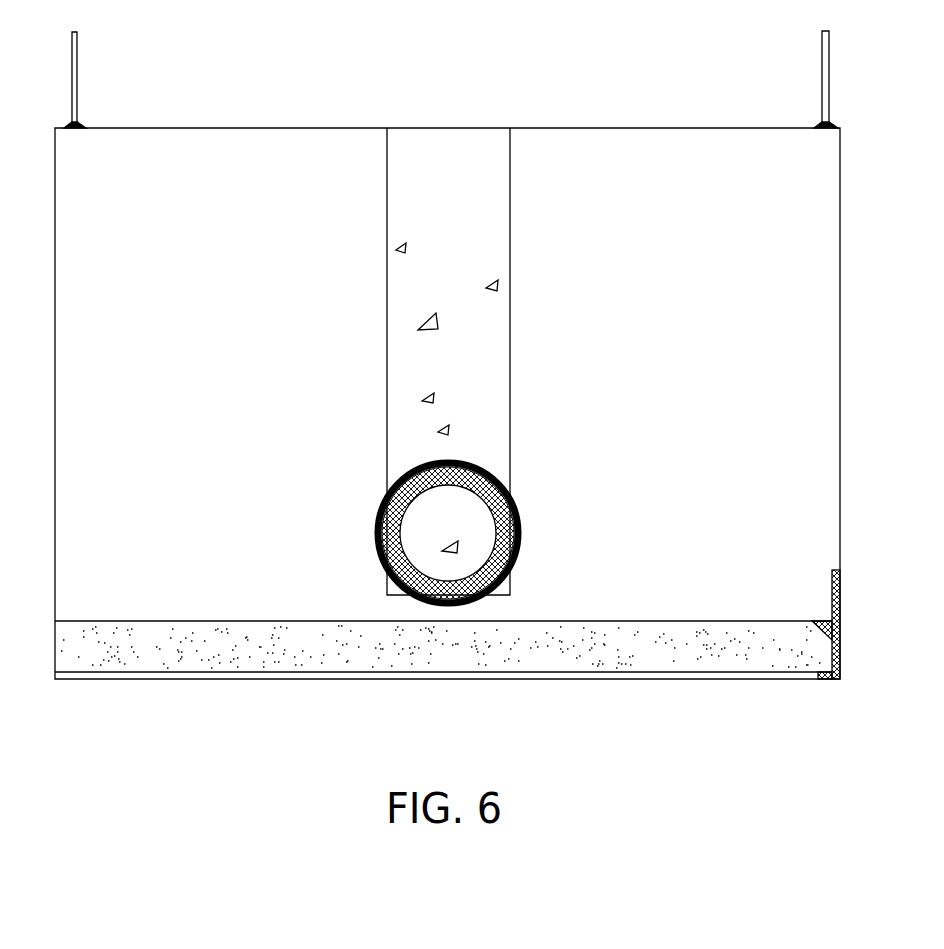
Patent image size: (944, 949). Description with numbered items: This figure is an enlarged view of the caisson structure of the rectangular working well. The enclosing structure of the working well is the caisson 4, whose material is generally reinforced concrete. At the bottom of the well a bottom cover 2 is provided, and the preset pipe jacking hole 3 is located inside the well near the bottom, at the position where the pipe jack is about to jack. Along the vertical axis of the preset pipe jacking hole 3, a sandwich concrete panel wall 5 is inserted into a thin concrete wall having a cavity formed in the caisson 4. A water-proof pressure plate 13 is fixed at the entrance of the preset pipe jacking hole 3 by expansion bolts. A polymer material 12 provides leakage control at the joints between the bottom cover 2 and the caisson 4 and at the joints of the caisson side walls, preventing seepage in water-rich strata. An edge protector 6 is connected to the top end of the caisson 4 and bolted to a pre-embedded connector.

The bottom cover 2 is at (72, 640).
The preset pipe jacking hole 3 is at (422, 483).
The caisson 4 is at (553, 137).
The sandwich concrete panel wall 5 is at (403, 340).
The edge protector 6 is at (77, 65).
The polymer material 12 is at (838, 618).
The water-proof pressure plate 13 is at (492, 451).